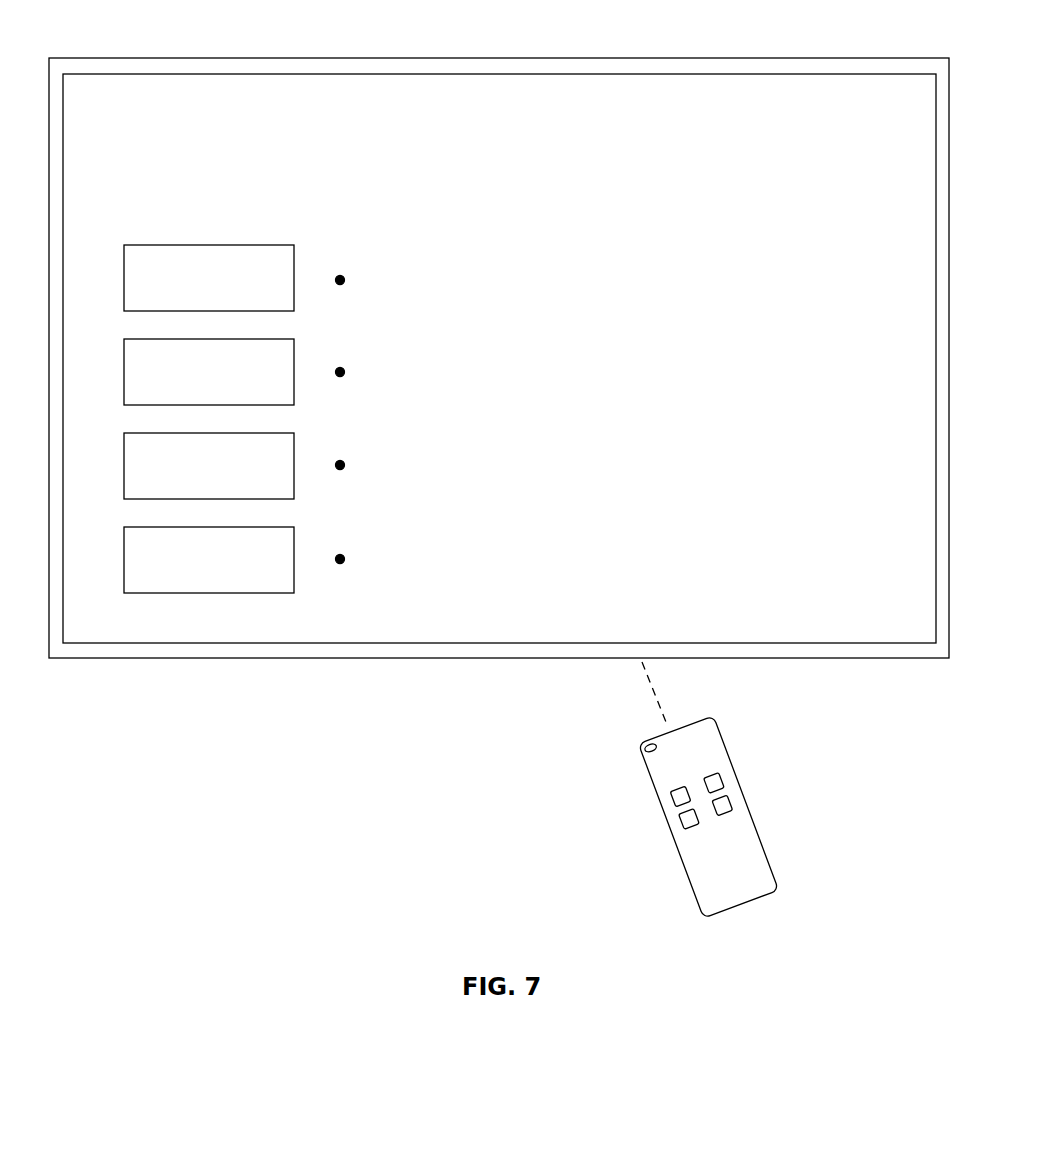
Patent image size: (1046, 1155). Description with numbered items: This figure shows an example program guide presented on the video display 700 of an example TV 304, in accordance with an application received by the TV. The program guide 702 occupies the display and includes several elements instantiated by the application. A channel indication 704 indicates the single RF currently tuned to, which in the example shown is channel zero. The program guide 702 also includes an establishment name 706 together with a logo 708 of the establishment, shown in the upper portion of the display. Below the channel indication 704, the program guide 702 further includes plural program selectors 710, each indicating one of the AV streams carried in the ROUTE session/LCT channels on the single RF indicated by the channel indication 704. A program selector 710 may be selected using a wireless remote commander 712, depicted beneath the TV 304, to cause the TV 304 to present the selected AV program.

The video display 700 is at (863, 65).
The TV 304 is at (680, 50).
The program guide 702 is at (275, 369).
The channel indication 704 is at (192, 168).
The establishment name 706 is at (675, 122).
The logo 708 is at (713, 156).
The program selectors 710 is at (243, 245).
The wireless remote commander 712 is at (745, 793).